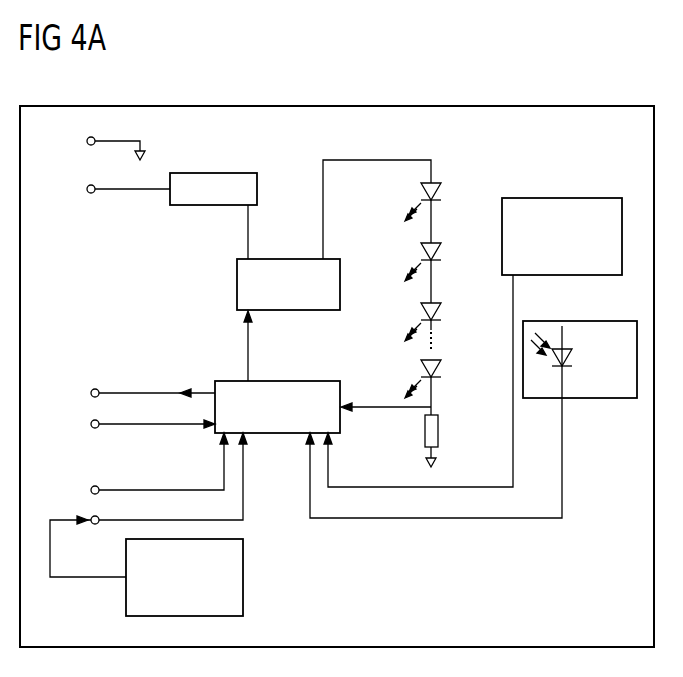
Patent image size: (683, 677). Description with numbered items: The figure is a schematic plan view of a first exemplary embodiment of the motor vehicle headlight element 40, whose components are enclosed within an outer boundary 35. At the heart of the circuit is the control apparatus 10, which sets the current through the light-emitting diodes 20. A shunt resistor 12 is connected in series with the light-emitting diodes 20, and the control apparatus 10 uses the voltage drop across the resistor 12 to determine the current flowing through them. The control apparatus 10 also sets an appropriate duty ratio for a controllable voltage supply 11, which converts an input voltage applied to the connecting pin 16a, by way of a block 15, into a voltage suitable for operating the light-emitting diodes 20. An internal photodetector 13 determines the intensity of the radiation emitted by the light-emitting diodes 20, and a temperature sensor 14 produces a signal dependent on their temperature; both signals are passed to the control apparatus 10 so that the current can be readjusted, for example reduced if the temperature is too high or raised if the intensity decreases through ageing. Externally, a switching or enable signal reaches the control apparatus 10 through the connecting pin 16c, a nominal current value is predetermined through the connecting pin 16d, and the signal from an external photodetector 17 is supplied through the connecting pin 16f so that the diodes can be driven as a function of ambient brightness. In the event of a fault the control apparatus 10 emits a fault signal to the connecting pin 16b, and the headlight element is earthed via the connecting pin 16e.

The motor vehicle headlight element 40 is at (548, 96).
The housing 35 is at (322, 106).
The control apparatus 10 is at (272, 434).
The controllable voltage supply 11 is at (278, 259).
The shunt resistor 12 is at (438, 432).
The photodetector 13 is at (609, 398).
The temperature sensor 14 is at (565, 198).
The voltage supply unit 15 is at (257, 190).
The external photodetector 17 is at (243, 582).
The light-emitting diode 20 is at (441, 189).
The connecting pin 16a is at (87, 190).
The connecting pin 16b is at (91, 394).
The connecting pin 16c is at (91, 425).
The connecting pin 16d is at (91, 489).
The connecting pin 16e is at (87, 142).
The connecting pin 16f is at (91, 519).